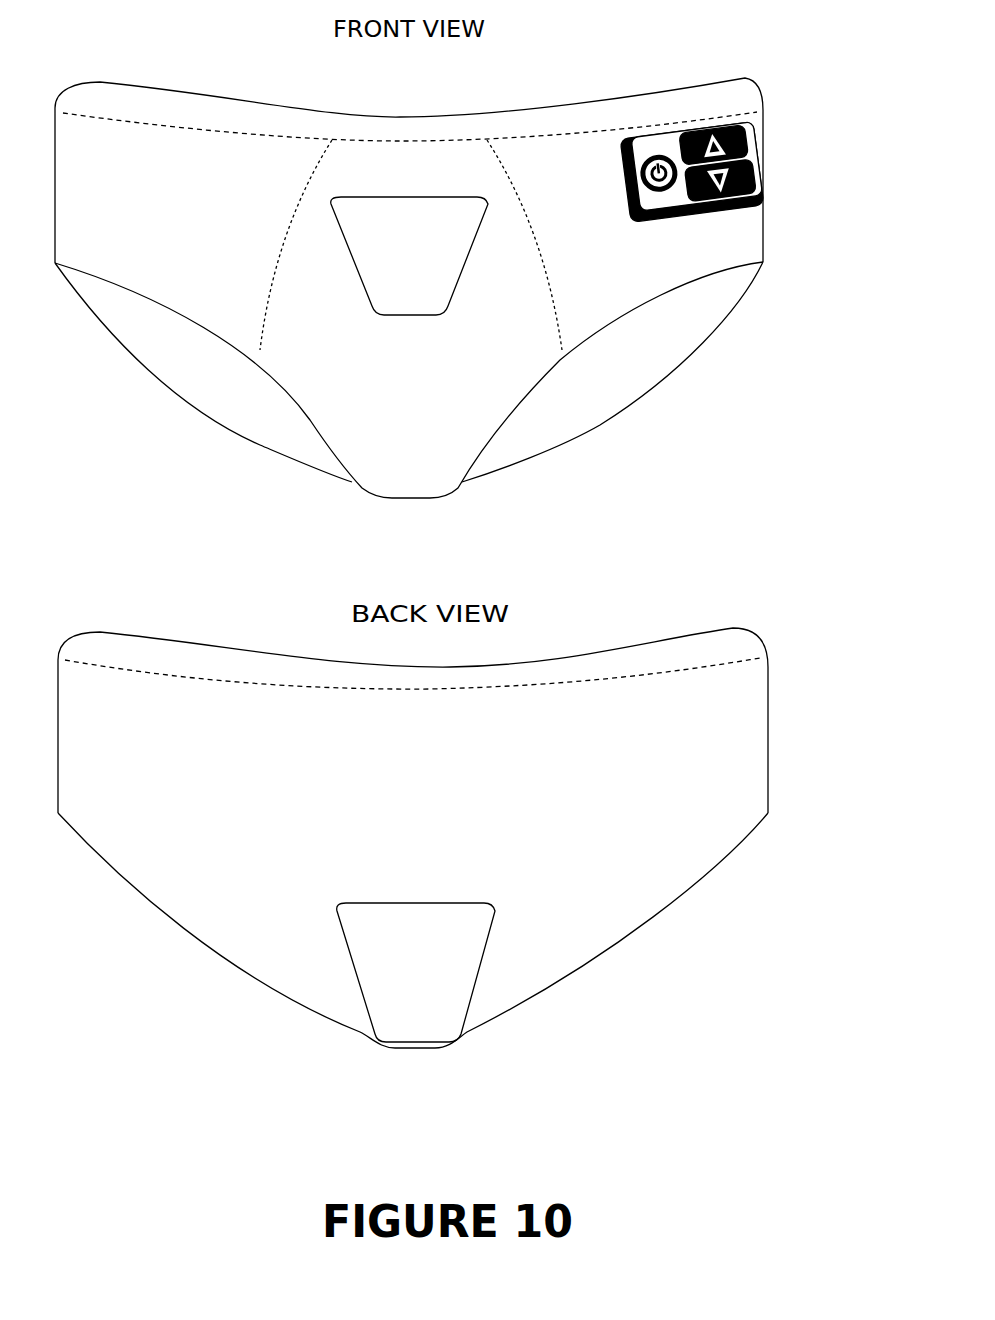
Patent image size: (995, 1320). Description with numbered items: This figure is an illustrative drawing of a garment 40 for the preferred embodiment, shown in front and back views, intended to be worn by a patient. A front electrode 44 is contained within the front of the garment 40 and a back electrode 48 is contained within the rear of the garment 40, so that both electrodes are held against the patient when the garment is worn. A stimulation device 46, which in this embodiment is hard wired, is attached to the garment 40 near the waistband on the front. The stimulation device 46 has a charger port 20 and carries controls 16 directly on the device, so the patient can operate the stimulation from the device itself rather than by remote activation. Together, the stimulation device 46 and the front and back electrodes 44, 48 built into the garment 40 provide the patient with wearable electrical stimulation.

The controls 16 is at (747, 147).
The charger port 20 is at (650, 166).
The garment 40 is at (143, 367).
The front electrode 44 is at (468, 303).
The stimulation device 46 is at (764, 153).
The back electrode 48 is at (480, 995).